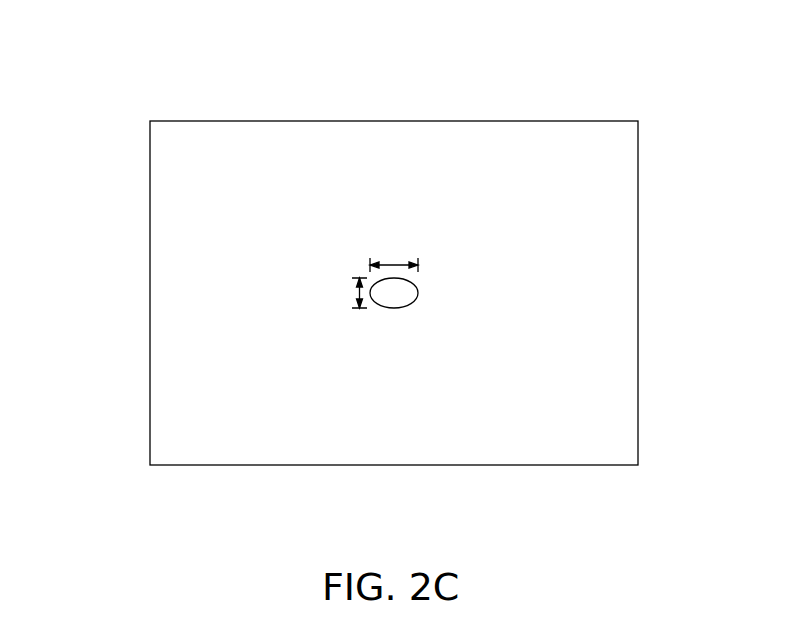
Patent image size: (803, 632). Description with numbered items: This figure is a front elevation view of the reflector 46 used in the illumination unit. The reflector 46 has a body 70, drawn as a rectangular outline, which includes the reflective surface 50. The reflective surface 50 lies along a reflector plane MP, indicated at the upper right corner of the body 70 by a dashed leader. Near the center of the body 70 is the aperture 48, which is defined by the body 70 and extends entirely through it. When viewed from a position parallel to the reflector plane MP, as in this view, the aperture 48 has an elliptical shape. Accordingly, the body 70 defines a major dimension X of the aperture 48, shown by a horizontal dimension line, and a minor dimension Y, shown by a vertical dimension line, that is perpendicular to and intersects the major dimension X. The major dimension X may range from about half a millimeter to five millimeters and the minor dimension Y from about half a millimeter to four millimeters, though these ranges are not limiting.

The reflector 46 is at (107, 68).
The body 70 is at (178, 166).
The reflective surface 50 is at (217, 437).
The reflector plane mp is at (589, 160).
The aperture 48 is at (418, 296).
The major dimension x is at (394, 265).
The minor dimension y is at (359, 293).